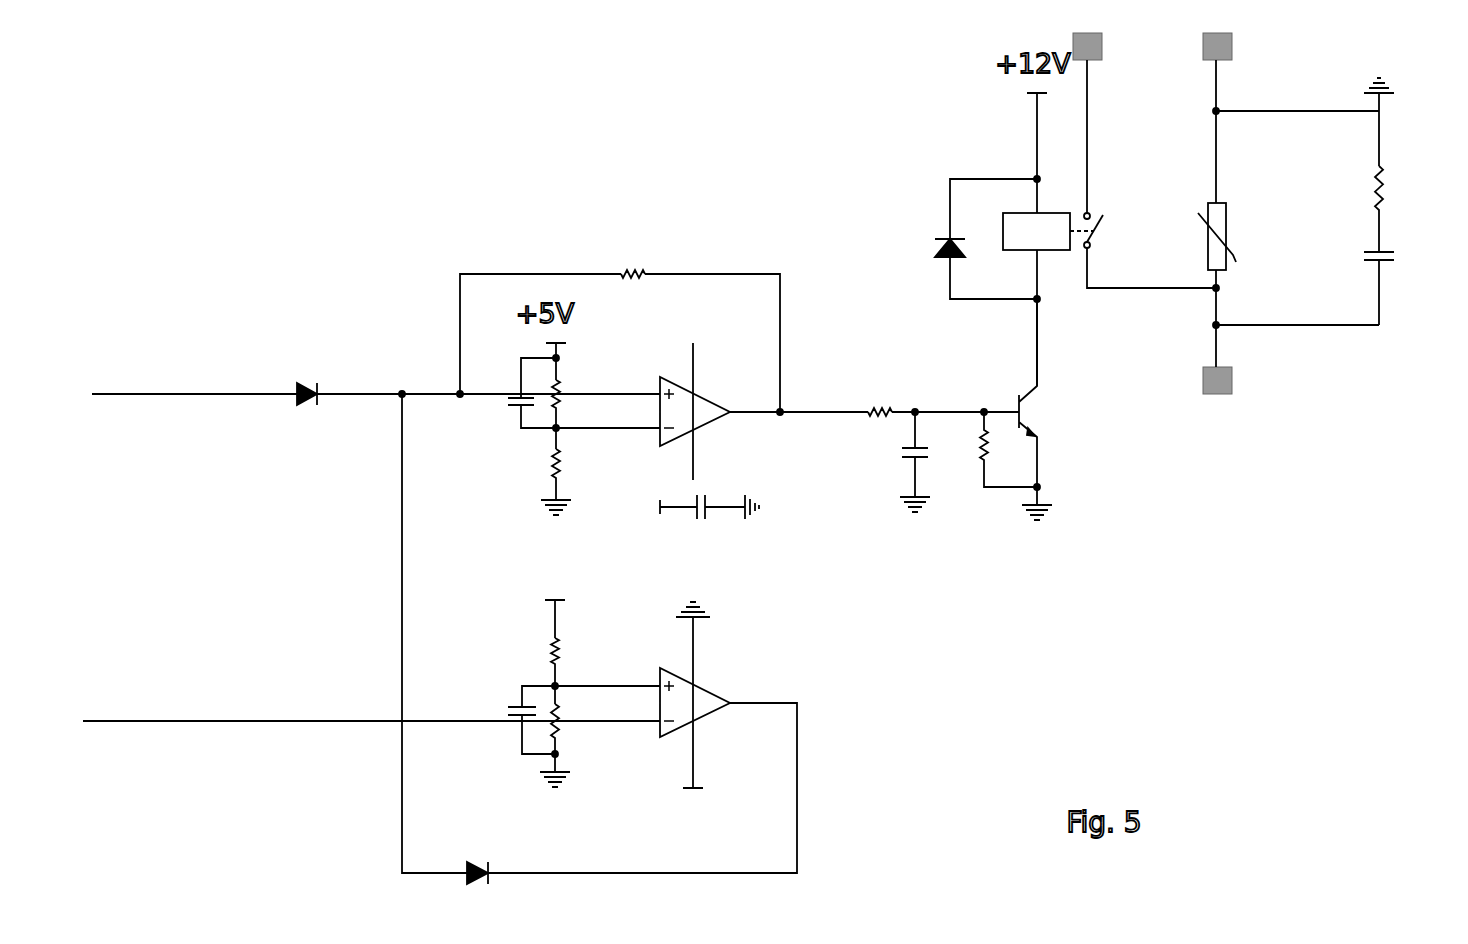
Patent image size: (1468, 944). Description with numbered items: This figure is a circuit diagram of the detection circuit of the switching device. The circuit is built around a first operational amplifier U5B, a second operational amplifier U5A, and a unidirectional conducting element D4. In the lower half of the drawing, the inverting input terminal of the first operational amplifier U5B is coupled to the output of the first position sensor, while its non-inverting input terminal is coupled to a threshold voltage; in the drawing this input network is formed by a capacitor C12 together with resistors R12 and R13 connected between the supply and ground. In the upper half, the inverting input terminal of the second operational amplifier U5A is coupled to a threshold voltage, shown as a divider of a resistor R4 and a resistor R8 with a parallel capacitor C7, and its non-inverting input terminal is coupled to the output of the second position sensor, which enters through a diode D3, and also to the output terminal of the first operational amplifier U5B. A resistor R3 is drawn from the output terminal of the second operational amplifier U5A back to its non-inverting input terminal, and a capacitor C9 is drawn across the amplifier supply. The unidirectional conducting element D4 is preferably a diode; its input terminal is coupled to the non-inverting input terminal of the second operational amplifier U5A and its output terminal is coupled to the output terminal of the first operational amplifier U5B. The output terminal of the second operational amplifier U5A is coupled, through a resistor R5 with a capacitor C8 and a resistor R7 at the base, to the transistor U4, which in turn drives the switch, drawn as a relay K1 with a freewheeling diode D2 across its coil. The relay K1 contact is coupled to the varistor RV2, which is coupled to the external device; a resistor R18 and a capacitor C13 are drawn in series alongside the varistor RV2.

The diode D3 is at (310, 371).
The feedback resistor R3 is at (620, 315).
The second operational amplifier U5A is at (716, 411).
The resistor R4 is at (606, 400).
The capacitor C7 is at (517, 395).
The resistor R8 is at (574, 481).
The decoupling capacitor C9 is at (676, 527).
The resistor R5 is at (877, 385).
The capacitor C8 is at (897, 462).
The resistor R7 is at (988, 452).
The transistor U4 is at (1056, 409).
The diode D2 is at (957, 239).
The relay K1 is at (1109, 209).
The varistor RV2 is at (1288, 213).
The resistor R18 is at (1402, 165).
The capacitor C13 is at (1407, 288).
The first operational amplifier U5B is at (718, 713).
The resistor R12 is at (594, 626).
The capacitor C12 is at (497, 716).
The resistor R13 is at (581, 745).
The unidirectional conducting element D4 is at (480, 845).